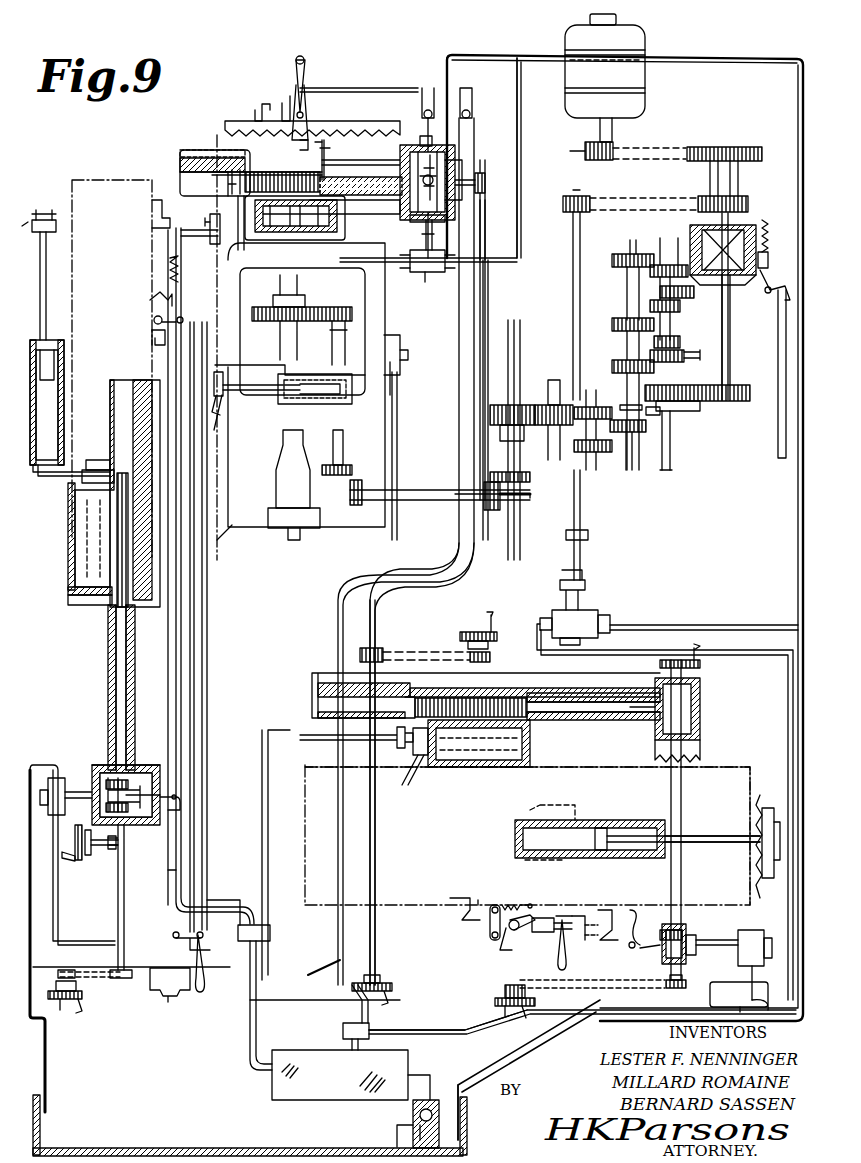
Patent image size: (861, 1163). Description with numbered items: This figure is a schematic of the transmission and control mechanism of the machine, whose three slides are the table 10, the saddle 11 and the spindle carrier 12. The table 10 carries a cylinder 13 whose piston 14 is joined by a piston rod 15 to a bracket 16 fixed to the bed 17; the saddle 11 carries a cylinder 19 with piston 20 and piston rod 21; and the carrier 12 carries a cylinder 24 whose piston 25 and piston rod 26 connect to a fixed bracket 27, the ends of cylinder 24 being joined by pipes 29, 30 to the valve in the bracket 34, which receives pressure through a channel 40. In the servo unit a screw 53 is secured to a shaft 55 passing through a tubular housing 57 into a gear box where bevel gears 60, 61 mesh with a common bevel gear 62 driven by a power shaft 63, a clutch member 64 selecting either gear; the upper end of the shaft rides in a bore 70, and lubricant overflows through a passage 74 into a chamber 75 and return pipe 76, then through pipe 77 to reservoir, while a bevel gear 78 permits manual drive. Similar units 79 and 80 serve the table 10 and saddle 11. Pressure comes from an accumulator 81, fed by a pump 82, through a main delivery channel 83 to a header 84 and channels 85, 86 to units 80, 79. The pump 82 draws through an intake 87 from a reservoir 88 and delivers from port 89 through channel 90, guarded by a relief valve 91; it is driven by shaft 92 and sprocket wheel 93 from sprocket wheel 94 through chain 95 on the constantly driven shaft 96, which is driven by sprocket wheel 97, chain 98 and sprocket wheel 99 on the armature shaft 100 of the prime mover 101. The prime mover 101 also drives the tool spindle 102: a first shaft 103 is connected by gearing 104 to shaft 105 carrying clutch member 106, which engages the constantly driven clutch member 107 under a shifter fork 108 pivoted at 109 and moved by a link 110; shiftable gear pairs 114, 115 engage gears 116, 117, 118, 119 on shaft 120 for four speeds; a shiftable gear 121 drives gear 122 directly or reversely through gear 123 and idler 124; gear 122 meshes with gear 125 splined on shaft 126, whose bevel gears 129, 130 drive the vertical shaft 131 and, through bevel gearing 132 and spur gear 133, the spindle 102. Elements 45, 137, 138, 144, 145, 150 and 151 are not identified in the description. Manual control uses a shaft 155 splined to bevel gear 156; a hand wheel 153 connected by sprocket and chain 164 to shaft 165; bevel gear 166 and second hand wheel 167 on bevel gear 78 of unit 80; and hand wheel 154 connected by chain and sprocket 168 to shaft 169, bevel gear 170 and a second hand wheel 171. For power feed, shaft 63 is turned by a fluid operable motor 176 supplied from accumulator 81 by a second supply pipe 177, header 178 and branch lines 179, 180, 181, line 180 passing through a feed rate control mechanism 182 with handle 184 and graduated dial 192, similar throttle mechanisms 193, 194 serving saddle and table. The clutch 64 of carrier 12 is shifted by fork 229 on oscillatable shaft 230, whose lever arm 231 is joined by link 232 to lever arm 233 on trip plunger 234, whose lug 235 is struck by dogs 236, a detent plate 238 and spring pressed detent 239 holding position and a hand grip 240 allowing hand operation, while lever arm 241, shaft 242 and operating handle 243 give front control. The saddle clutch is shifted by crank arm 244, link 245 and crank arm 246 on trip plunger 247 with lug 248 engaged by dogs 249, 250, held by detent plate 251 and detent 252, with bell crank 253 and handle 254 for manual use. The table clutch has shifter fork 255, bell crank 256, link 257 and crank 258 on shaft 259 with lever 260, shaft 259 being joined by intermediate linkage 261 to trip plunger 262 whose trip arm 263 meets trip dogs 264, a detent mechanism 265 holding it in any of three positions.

The work table 10 is at (708, 782).
The saddle 11 is at (200, 438).
The spindle carrier 12 is at (225, 121).
The cylinder 13 is at (560, 858).
The piston 14 is at (602, 852).
The piston rod 15 is at (692, 846).
The bracket 16 is at (768, 880).
The bed 17 is at (40, 216).
The cylinder 19 is at (30, 476).
The piston 20 is at (52, 345).
The piston rod 21 is at (40, 300).
The cylinder 24 is at (332, 408).
The piston 25 is at (292, 404).
The piston rod 26 is at (242, 395).
The fixed bracket 27 is at (224, 380).
The pipe 29 is at (262, 365).
The pipe 30 is at (298, 264).
The bracket 34 is at (345, 238).
The channel 40 is at (205, 226).
The support 45 is at (258, 246).
The screw 53 is at (280, 172).
The shaft 55 is at (356, 196).
The tubular housing 57 is at (372, 204).
The bevel gear 60 is at (416, 148).
The bevel gear 61 is at (460, 160).
The common bevel gear 62 is at (434, 230).
The power shaft 63 is at (422, 236).
The clutch member 64 is at (433, 150).
The bore 70 is at (190, 184).
The passage 74 is at (180, 165).
The chamber 75 is at (180, 152).
The return pipe 76 is at (360, 160).
The pipe 77 is at (468, 66).
The bevel gear 78 is at (485, 208).
The servo motor unit 79 is at (530, 736).
The servo motor unit 80 is at (68, 505).
The accumulator 81 is at (312, 1054).
The pump 82 is at (590, 614).
The main delivery channel 83 is at (256, 990).
The header 84 is at (238, 930).
The channel 85 is at (176, 862).
The channel 86 is at (262, 812).
The intake 87 is at (612, 624).
The reservoir 88 is at (474, 1095).
The delivery port 89 is at (542, 625).
The channel 90 is at (572, 658).
The relief valve 91 is at (413, 1115).
The shaft 92 is at (580, 526).
The sprocket wheel 93 is at (563, 204).
The sprocket wheel 94 is at (745, 196).
The chain 95 is at (626, 200).
The constantly driven shaft 96 is at (735, 173).
The sprocket wheel 97 is at (720, 147).
The chain 98 is at (645, 148).
The sprocket wheel 99 is at (570, 151).
The armature shaft 100 is at (585, 145).
The prime mover 101 is at (628, 80).
The tool spindle 102 is at (292, 540).
The first shaft 103 is at (672, 435).
The gearing 104 is at (700, 402).
The shaft 105 is at (730, 378).
The clutch member 106 is at (690, 240).
The constantly driven clutch member 107 is at (764, 220).
The shifter fork 108 is at (752, 290).
The pivot 109 is at (772, 290).
The link 110 is at (778, 440).
The first pair of shiftable gears 114 is at (654, 355).
The second pair of shiftable gears 115 is at (650, 300).
The gear 116 is at (612, 364).
The gear 117 is at (612, 326).
The gear 118 is at (627, 292).
The gear 119 is at (612, 260).
The shaft 120 is at (664, 472).
The shiftable gear 121 is at (650, 438).
The gear 122 is at (548, 390).
The gear 123 is at (604, 452).
The co-axial idler 124 is at (592, 392).
The gear 125 is at (490, 408).
The shaft 126 is at (508, 342).
The bevel gear 129 is at (530, 480).
The bevel gear 130 is at (492, 510).
The vertical shaft 131 is at (402, 492).
The bevel gearing 132 is at (352, 468).
The spur gear 133 is at (326, 300).
The screw 137 is at (704, 355).
The gear 138 is at (685, 355).
The gear 144 is at (668, 265).
The gear 145 is at (680, 295).
The collar 150 is at (660, 412).
The fork 151 is at (622, 406).
The hand wheel 153 is at (56, 1000).
The hand wheel 154 is at (535, 1002).
The shaft 155 is at (375, 940).
The bevel gear 156 is at (484, 176).
The sprocket and chain connection 164 is at (92, 980).
The shaft 165 is at (124, 930).
The bevel gear 166 is at (96, 849).
The second hand wheel 167 is at (70, 862).
The chain and sprocket connection 168 is at (618, 988).
The shaft 169 is at (686, 962).
The bevel gear 170 is at (698, 710).
The second hand wheel 171 is at (700, 664).
The fluid operable motor 176 is at (425, 282).
The second supply pipe 177 is at (358, 1044).
The header 178 is at (343, 1032).
The branch line 179 is at (262, 1012).
The branch line 180 is at (368, 1012).
The branch line 181 is at (418, 1032).
The feed rate control mechanism 182 is at (397, 380).
The handle 184 is at (408, 356).
The graduated dial 192 is at (402, 372).
The throttle mechanism 193 is at (160, 998).
The throttle mechanism 194 is at (745, 1000).
The fork 229 is at (414, 222).
The oscillatable shaft 230 is at (422, 140).
The lever arm 231 is at (424, 88).
The link 232 is at (348, 88).
The lever arm 233 is at (303, 82).
The trip plunger 234 is at (282, 103).
The lug 235 is at (296, 80).
The dogs 236 is at (262, 110).
The detent plate 238 is at (300, 146).
The spring pressed detent 239 is at (330, 145).
The hand grip 240 is at (300, 56).
The lever arm 241 is at (472, 98).
The shaft 242 is at (474, 114).
The operating handle 243 is at (312, 972).
The crank arm 244 is at (180, 806).
The link 245 is at (180, 652).
The crank arm 246 is at (170, 312).
The trip plunger 247 is at (154, 318).
The lug 248 is at (152, 332).
The dog 249 is at (152, 346).
The dog 250 is at (152, 212).
The detent plate 251 is at (150, 302).
The spring pressed detent 252 is at (160, 285).
The bell crank 253 is at (188, 925).
The manually operable handle 254 is at (205, 980).
The shifter fork 255 is at (660, 932).
The bell crank 256 is at (640, 950).
The link 257 is at (582, 916).
The crank 258 is at (546, 918).
The shaft 259 is at (591, 925).
The manually operable lever 260 is at (560, 958).
The intermediate linkage 261 is at (526, 906).
The trip plunger 262 is at (518, 930).
The trip arm 263 is at (532, 950).
The trip dogs 264 is at (618, 943).
The detent mechanism 265 is at (496, 942).